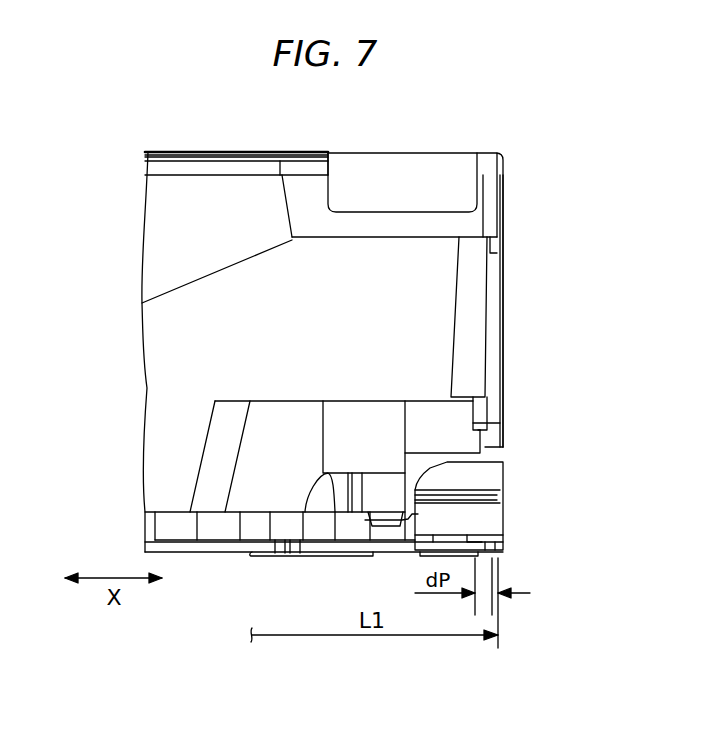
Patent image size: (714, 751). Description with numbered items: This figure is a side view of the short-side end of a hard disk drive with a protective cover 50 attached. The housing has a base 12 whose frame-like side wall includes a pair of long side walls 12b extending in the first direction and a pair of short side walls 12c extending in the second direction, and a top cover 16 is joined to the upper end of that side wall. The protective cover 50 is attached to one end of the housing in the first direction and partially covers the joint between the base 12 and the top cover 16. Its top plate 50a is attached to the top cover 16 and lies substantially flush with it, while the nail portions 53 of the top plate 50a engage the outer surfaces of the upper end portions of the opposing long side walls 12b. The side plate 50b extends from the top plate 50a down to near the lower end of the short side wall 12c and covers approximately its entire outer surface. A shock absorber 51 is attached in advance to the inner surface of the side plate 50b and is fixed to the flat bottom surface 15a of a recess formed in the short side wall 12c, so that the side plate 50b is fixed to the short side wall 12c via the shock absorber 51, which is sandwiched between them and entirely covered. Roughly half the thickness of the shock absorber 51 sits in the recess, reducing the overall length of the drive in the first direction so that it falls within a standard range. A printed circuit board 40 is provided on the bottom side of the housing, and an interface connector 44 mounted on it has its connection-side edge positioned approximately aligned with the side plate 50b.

The base 12 is at (145, 270).
The long side wall 12b is at (170, 352).
The short side wall 12c is at (487, 327).
The top cover 16 is at (182, 152).
The protective cover 50 is at (510, 184).
The top plate 50a is at (328, 153).
The side plate 50b is at (505, 228).
The nail portion 53 is at (405, 176).
The shock absorber 51 is at (487, 410).
The bottom surface 15a is at (480, 428).
The interface connector 44 is at (490, 520).
The printed circuit board 40 is at (258, 553).